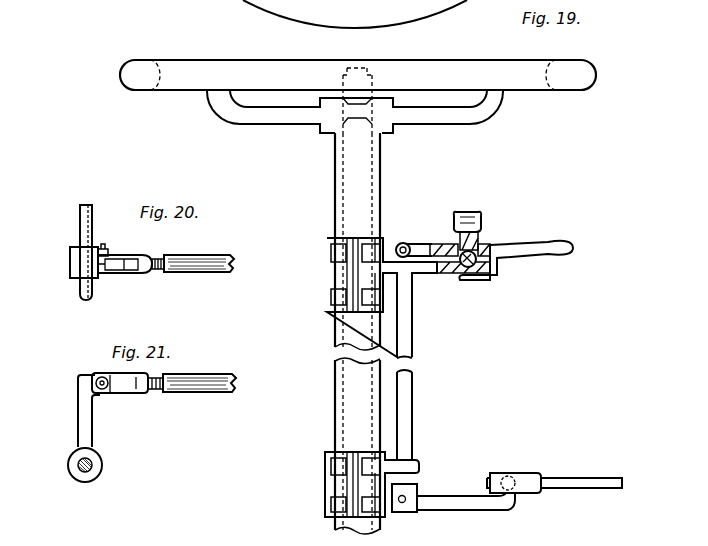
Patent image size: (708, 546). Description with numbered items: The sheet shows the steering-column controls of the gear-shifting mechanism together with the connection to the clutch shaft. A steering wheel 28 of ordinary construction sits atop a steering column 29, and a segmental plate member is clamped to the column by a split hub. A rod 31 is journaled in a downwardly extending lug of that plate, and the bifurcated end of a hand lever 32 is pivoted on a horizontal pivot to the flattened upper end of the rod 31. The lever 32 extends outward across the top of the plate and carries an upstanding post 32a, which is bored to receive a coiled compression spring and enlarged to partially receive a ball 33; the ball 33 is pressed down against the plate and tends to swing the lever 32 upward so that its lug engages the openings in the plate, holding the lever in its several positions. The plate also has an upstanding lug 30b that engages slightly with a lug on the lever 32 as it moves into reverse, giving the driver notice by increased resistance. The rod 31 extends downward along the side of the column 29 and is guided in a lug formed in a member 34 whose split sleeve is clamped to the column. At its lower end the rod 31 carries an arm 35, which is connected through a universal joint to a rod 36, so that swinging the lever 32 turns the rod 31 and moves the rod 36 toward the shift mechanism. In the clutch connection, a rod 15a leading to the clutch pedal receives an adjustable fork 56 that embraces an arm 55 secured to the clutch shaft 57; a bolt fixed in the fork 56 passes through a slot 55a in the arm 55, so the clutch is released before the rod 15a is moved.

In FIG. 20, the rod 15a is at (210, 264).
In FIG. 21, the rod 15a is at (213, 391).
In FIG. 19, the steering wheel 28 is at (133, 76).
In FIG. 19, the steering column 29 is at (356, 190).
In FIG. 19, the upstanding lug 30b is at (425, 250).
In FIG. 19, the rod 31 is at (407, 323).
In FIG. 19, the hand lever 32 is at (506, 248).
In FIG. 19, the upstanding post 32a is at (458, 212).
In FIG. 19, the ball 33 is at (478, 260).
In FIG. 19, the member 34 is at (333, 482).
In FIG. 19, the arm 35 is at (458, 505).
In FIG. 19, the rod 36 is at (559, 482).
In FIG. 20, the arm 55 is at (75, 253).
In FIG. 21, the arm 55 is at (87, 435).
In FIG. 21, the slot 55a is at (88, 378).
In FIG. 20, the adjustable fork 56 is at (140, 268).
In FIG. 21, the adjustable fork 56 is at (137, 391).
In FIG. 20, the clutch shaft 57 is at (82, 290).
In FIG. 21, the clutch shaft 57 is at (83, 470).